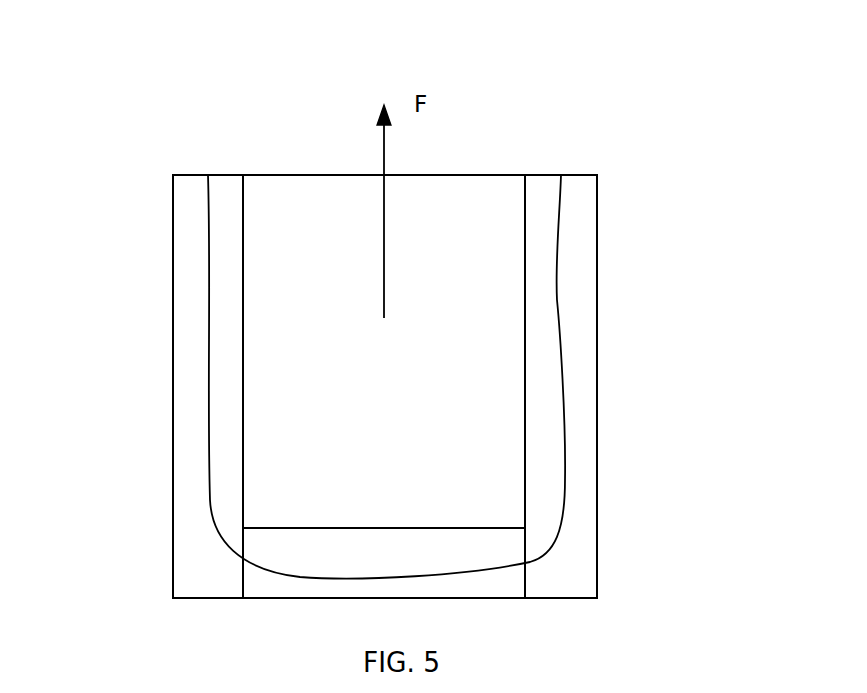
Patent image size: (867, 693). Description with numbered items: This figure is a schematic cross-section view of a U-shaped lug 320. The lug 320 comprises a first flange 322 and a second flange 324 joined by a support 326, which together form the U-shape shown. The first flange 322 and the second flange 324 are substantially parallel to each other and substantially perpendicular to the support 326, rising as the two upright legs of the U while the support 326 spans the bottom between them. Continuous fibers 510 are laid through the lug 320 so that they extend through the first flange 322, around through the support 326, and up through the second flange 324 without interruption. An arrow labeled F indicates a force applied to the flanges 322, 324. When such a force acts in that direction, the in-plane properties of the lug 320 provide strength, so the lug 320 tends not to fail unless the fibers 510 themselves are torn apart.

The lug 320 is at (172, 100).
The first flange 322 is at (172, 368).
The second flange 324 is at (597, 245).
The support 326 is at (331, 528).
The continuous fibers 510 is at (562, 383).